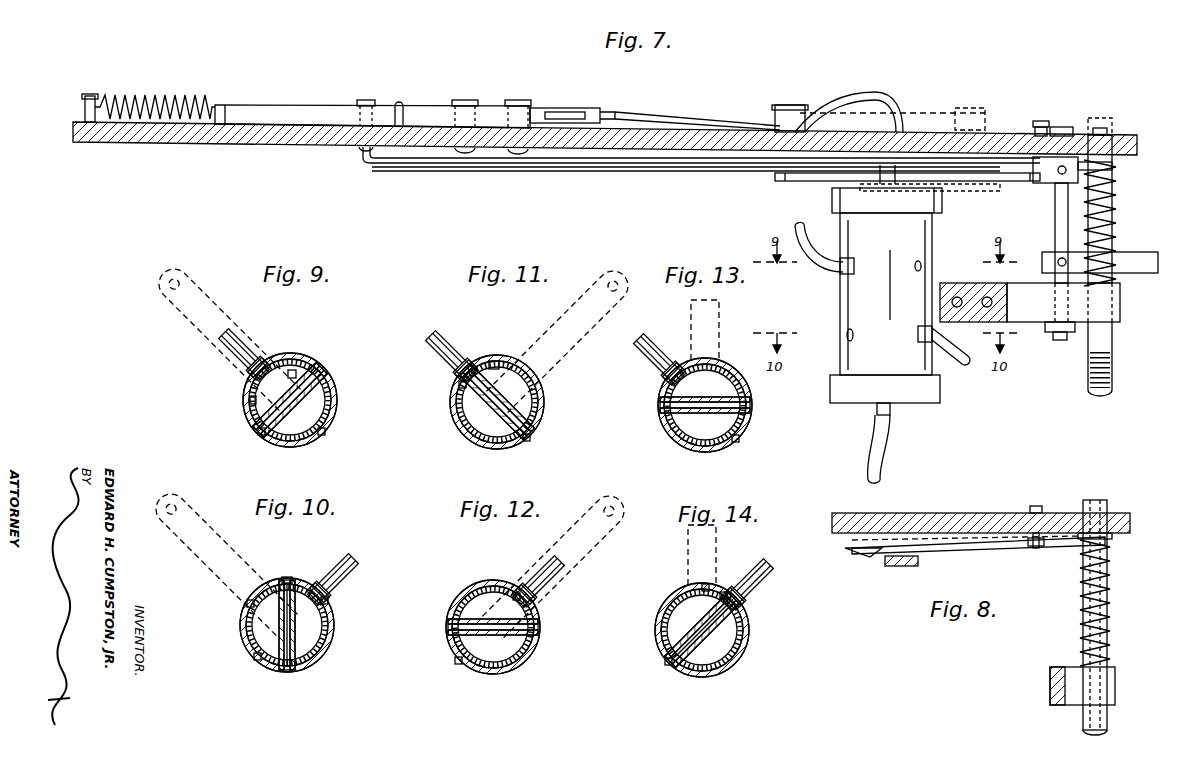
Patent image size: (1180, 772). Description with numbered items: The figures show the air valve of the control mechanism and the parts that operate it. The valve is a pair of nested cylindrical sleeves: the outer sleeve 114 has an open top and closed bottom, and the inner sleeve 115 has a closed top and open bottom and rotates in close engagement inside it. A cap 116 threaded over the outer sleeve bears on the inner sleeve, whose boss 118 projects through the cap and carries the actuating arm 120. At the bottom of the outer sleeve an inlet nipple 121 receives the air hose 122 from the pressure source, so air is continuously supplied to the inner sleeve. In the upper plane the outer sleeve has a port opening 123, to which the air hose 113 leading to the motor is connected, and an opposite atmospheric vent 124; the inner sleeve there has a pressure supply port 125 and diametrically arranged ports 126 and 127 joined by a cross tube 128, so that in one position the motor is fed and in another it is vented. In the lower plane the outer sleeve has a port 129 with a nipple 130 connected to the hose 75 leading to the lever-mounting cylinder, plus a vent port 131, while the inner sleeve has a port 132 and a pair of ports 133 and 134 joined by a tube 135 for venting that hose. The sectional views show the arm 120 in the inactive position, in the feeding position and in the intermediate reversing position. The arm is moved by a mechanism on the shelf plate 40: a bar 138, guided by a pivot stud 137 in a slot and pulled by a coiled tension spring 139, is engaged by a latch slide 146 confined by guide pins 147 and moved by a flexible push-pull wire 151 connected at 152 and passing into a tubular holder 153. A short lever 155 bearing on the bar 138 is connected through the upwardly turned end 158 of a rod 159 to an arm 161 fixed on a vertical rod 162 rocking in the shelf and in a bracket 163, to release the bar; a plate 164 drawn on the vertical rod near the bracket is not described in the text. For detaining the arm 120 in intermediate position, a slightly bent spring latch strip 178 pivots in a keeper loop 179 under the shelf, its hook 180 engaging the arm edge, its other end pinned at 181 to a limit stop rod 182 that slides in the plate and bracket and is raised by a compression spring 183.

In FIG. 8, the shelf plate 40 is at (920, 513).
In FIG. 7, the hose 75 is at (952, 366).
In FIG. 10, the hose 75 is at (332, 569).
In FIG. 12, the hose 75 is at (556, 580).
In FIG. 14, the hose 75 is at (755, 583).
In FIG. 7, the air hose 113 is at (803, 222).
In FIG. 9, the air hose 113 is at (221, 353).
In FIG. 11, the air hose 113 is at (452, 352).
In FIG. 13, the air hose 113 is at (647, 358).
In FIG. 7, the outer sleeve 114 is at (933, 232).
In FIG. 9, the outer sleeve 114 is at (306, 400).
In FIG. 10, the outer sleeve 114 is at (302, 625).
In FIG. 11, the outer sleeve 114 is at (482, 402).
In FIG. 12, the outer sleeve 114 is at (512, 627).
In FIG. 13, the outer sleeve 114 is at (721, 405).
In FIG. 14, the outer sleeve 114 is at (684, 630).
In FIG. 9, the inner sleeve 115 is at (312, 400).
In FIG. 10, the inner sleeve 115 is at (266, 625).
In FIG. 11, the inner sleeve 115 is at (515, 402).
In FIG. 12, the inner sleeve 115 is at (472, 627).
In FIG. 13, the inner sleeve 115 is at (688, 406).
In FIG. 14, the inner sleeve 115 is at (728, 630).
In FIG. 7, the cap 116 is at (943, 201).
In FIG. 7, the boss 118 is at (906, 187).
In FIG. 7, the actuating arm 120 is at (778, 178).
In FIG. 9, the actuating arm 120 is at (227, 335).
In FIG. 10, the actuating arm 120 is at (224, 562).
In FIG. 11, the actuating arm 120 is at (560, 334).
In FIG. 12, the actuating arm 120 is at (569, 564).
In FIG. 8, the actuating arm 120 is at (895, 567).
In FIG. 7, the nipple 121 is at (892, 410).
In FIG. 7, the air hose 122 is at (886, 452).
In FIG. 9, the port opening 123 is at (229, 369).
In FIG. 11, the port opening 123 is at (442, 376).
In FIG. 13, the port opening 123 is at (647, 382).
In FIG. 7, the vent port 124 is at (922, 264).
In FIG. 9, the vent port 124 is at (340, 439).
In FIG. 11, the vent port 124 is at (549, 428).
In FIG. 13, the vent port 124 is at (753, 446).
In FIG. 9, the pressure supply port 125 is at (268, 392).
In FIG. 11, the pressure supply port 125 is at (504, 376).
In FIG. 13, the pressure supply port 125 is at (705, 396).
In FIG. 9, the port 126 is at (245, 439).
In FIG. 11, the port 126 is at (439, 398).
In FIG. 9, the port 127 is at (309, 392).
In FIG. 11, the port 127 is at (497, 418).
In FIG. 9, the cross tube 128 is at (312, 355).
In FIG. 10, the port 129 is at (347, 603).
In FIG. 12, the port 129 is at (554, 609).
In FIG. 14, the port 129 is at (760, 611).
In FIG. 10, the nipple 130 is at (313, 582).
In FIG. 7, the vent port 131 is at (846, 333).
In FIG. 10, the vent port 131 is at (262, 673).
In FIG. 12, the vent port 131 is at (443, 674).
In FIG. 14, the vent port 131 is at (648, 675).
In FIG. 10, the port 132 is at (227, 598).
In FIG. 12, the port 132 is at (500, 604).
In FIG. 14, the port 132 is at (728, 567).
In FIG. 10, the port 133 is at (306, 640).
In FIG. 12, the port 133 is at (493, 627).
In FIG. 14, the port 133 is at (702, 650).
In FIG. 10, the port 134 is at (275, 573).
In FIG. 14, the port 134 is at (737, 579).
In FIG. 10, the tube 135 is at (331, 625).
In FIG. 14, the tube 135 is at (713, 648).
In FIG. 7, the pivot stud 137 is at (795, 107).
In FIG. 7, the bar 138 is at (288, 106).
In FIG. 7, the coiled tension spring 139 is at (160, 96).
In FIG. 7, the latch slide 146 is at (478, 105).
In FIG. 7, the guide pins 147 is at (516, 156).
In FIG. 7, the push-pull wire 151 is at (655, 112).
In FIG. 7, the wire connection 152 is at (565, 110).
In FIG. 7, the tubular holder 153 is at (860, 95).
In FIG. 7, the lever 155 is at (402, 102).
In FIG. 7, the upwardly turned end 158 is at (358, 151).
In FIG. 7, the rod 159 is at (570, 171).
In FIG. 7, the arm 161 is at (1042, 183).
In FIG. 7, the vertical rod 162 is at (1056, 209).
In FIG. 7, the bracket 163 is at (1032, 323).
In FIG. 7, the plate 164 is at (1145, 256).
In FIG. 8, the spring latch strip 178 is at (940, 550).
In FIG. 7, the keeper loop 179 is at (1042, 128).
In FIG. 8, the keeper loop 179 is at (1033, 548).
In FIG. 8, the pivot pin 181 is at (1085, 520).
In FIG. 7, the limit stop rod 182 is at (1113, 356).
In FIG. 8, the limit stop rod 182 is at (1108, 512).
In FIG. 8, the compression spring 183 is at (1110, 577).
In FIG. 8, the hook 180 is at (862, 552).